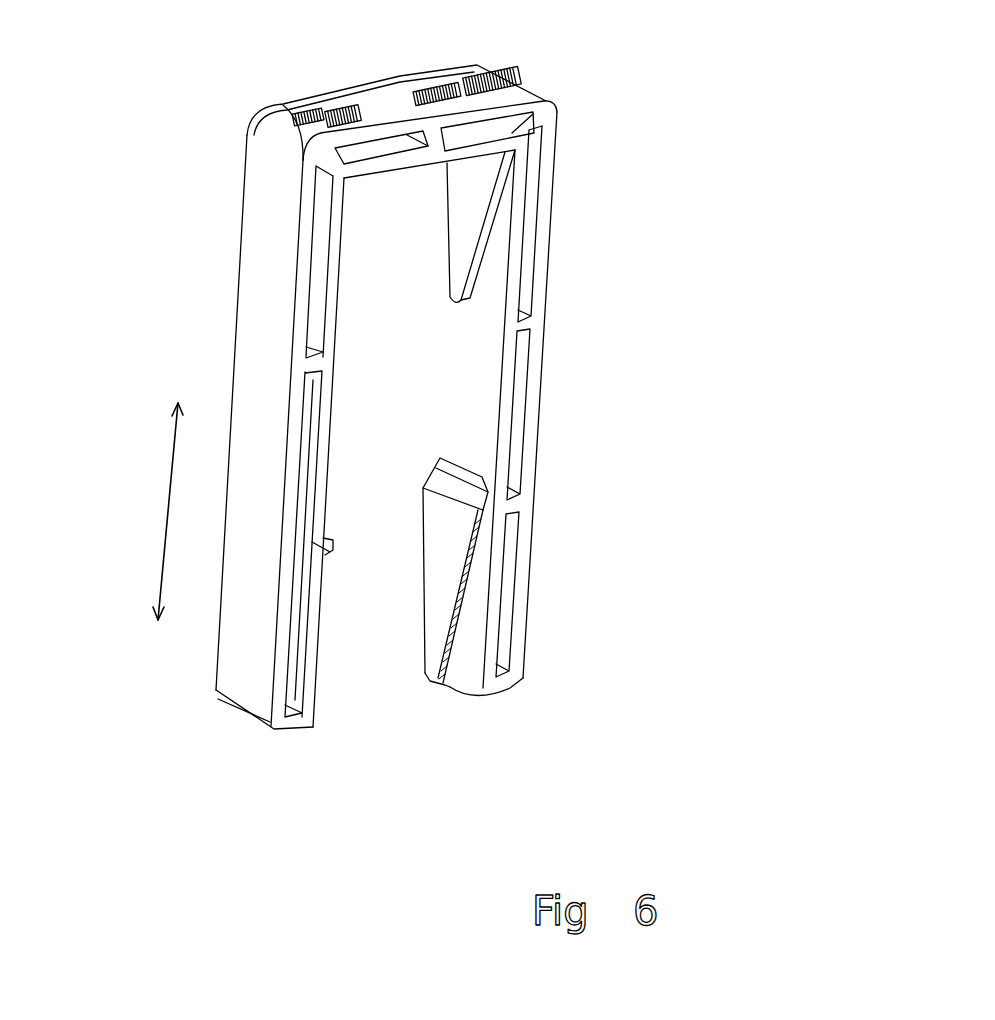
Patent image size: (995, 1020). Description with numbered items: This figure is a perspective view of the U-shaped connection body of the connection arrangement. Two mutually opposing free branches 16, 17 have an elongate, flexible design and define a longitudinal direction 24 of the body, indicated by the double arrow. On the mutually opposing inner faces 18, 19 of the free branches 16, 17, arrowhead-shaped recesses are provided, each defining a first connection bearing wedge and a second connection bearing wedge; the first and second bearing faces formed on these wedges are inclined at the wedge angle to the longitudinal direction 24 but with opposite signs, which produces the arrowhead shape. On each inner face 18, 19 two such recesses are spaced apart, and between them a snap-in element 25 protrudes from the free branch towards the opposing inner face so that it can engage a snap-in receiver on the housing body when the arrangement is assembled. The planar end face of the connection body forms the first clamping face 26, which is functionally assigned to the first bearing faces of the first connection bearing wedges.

The free branch 16 is at (500, 692).
The free branch 17 is at (232, 670).
The inner face 18 is at (477, 381).
The inner face 19 is at (347, 380).
The longitudinal direction 24 is at (170, 510).
The snap-in element 25 is at (470, 462).
The first clamping face 26 is at (543, 117).